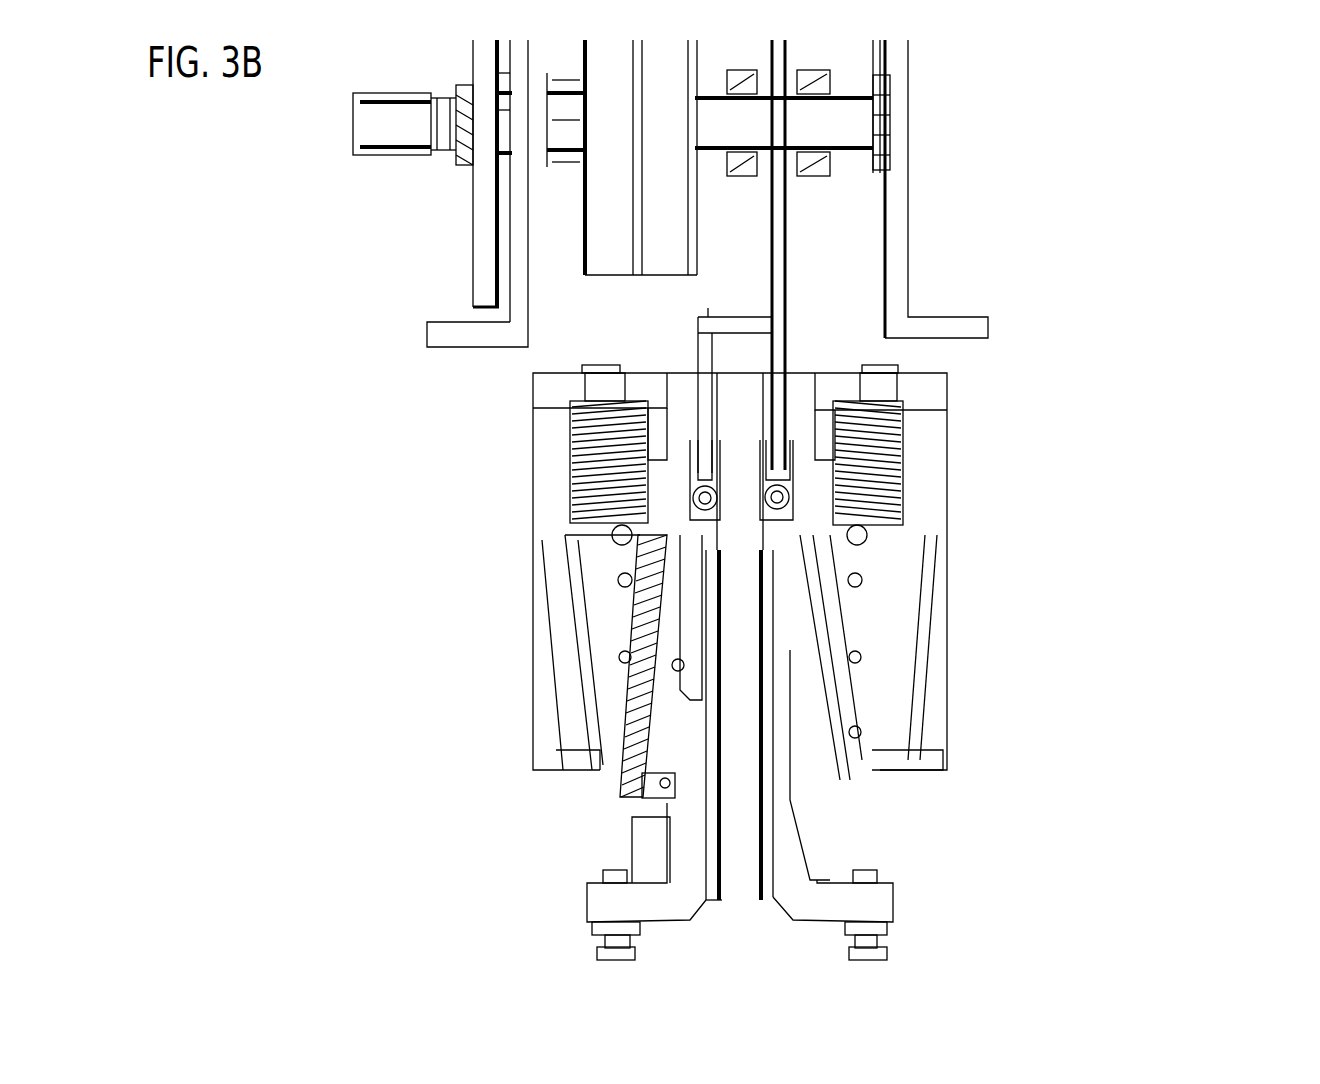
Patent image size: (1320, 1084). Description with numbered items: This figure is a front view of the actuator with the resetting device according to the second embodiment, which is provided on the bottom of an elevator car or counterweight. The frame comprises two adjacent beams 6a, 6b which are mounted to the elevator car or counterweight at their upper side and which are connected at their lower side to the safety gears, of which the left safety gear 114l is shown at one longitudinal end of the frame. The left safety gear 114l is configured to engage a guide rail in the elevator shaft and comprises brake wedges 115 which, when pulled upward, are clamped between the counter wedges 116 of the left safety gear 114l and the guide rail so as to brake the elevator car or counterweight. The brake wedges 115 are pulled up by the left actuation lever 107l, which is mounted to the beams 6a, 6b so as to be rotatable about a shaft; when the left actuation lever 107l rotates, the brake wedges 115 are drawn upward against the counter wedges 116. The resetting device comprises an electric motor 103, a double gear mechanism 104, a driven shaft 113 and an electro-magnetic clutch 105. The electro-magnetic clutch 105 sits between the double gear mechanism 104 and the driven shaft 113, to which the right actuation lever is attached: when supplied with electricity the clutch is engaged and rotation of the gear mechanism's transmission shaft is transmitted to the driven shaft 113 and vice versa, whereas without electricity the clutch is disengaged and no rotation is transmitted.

The electric motor 103 is at (397, 130).
The double gear mechanism 104 is at (473, 173).
The beam 6b is at (427, 343).
The electro-magnetic clutch 105 is at (617, 240).
The driven shaft 113 is at (743, 127).
The beam 6a is at (902, 283).
The left actuation lever 107l is at (786, 287).
The left safety gear 114l is at (947, 577).
The brake wedges 115 is at (800, 630).
The counter wedges 116 is at (570, 667).